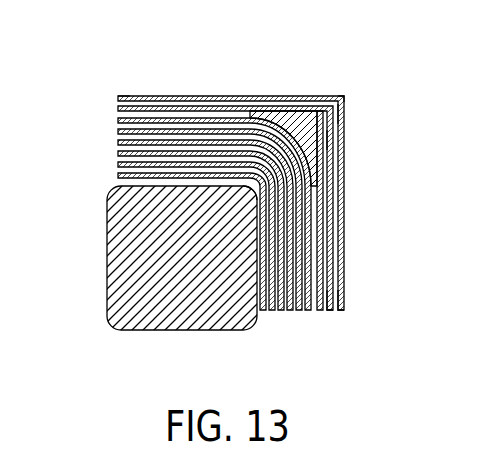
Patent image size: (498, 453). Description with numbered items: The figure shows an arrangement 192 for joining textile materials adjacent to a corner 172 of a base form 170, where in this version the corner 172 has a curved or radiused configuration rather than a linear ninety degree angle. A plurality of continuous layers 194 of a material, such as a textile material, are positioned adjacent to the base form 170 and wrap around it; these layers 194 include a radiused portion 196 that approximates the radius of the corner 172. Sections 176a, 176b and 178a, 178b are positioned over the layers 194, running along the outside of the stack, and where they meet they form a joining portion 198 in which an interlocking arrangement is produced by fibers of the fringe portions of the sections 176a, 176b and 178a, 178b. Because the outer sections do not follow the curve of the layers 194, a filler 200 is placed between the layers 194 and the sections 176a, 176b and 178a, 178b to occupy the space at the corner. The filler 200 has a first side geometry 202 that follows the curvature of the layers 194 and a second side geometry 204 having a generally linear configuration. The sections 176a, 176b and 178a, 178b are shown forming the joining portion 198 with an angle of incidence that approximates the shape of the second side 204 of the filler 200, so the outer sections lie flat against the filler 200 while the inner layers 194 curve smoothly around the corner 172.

The base form 170 is at (115, 306).
The corner 172 is at (248, 195).
The section 176a is at (118, 108).
The section 176b is at (118, 98).
The section 178a is at (329, 311).
The section 178b is at (342, 311).
The arrangement 192 is at (131, 73).
The continuous layers 194 is at (116, 118).
The radiused portion 196 is at (287, 128).
The joining portion 198 is at (342, 96).
The filler 200 is at (333, 140).
The first side geometry 202 is at (322, 187).
The second side geometry 204 is at (344, 113).